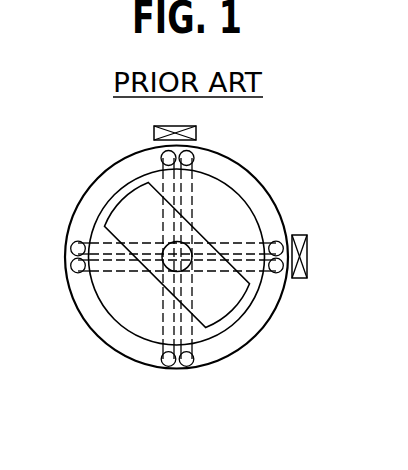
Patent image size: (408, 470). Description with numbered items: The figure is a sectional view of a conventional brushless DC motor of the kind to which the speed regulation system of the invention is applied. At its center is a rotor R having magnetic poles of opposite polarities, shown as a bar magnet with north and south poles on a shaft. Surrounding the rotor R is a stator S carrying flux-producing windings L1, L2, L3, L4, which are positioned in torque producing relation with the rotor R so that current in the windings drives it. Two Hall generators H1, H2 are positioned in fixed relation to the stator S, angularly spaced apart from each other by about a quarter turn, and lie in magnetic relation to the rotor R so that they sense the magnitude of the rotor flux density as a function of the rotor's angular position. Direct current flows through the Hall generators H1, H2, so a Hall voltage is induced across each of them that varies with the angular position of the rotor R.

The stator S is at (266, 186).
The rotor R is at (195, 240).
The flux-producing winding L1 is at (77, 241).
The flux-producing winding L2 is at (166, 368).
The flux-producing winding L3 is at (76, 274).
The flux-producing winding L4 is at (188, 368).
The Hall generator H1 is at (196, 129).
The Hall generator H2 is at (307, 248).